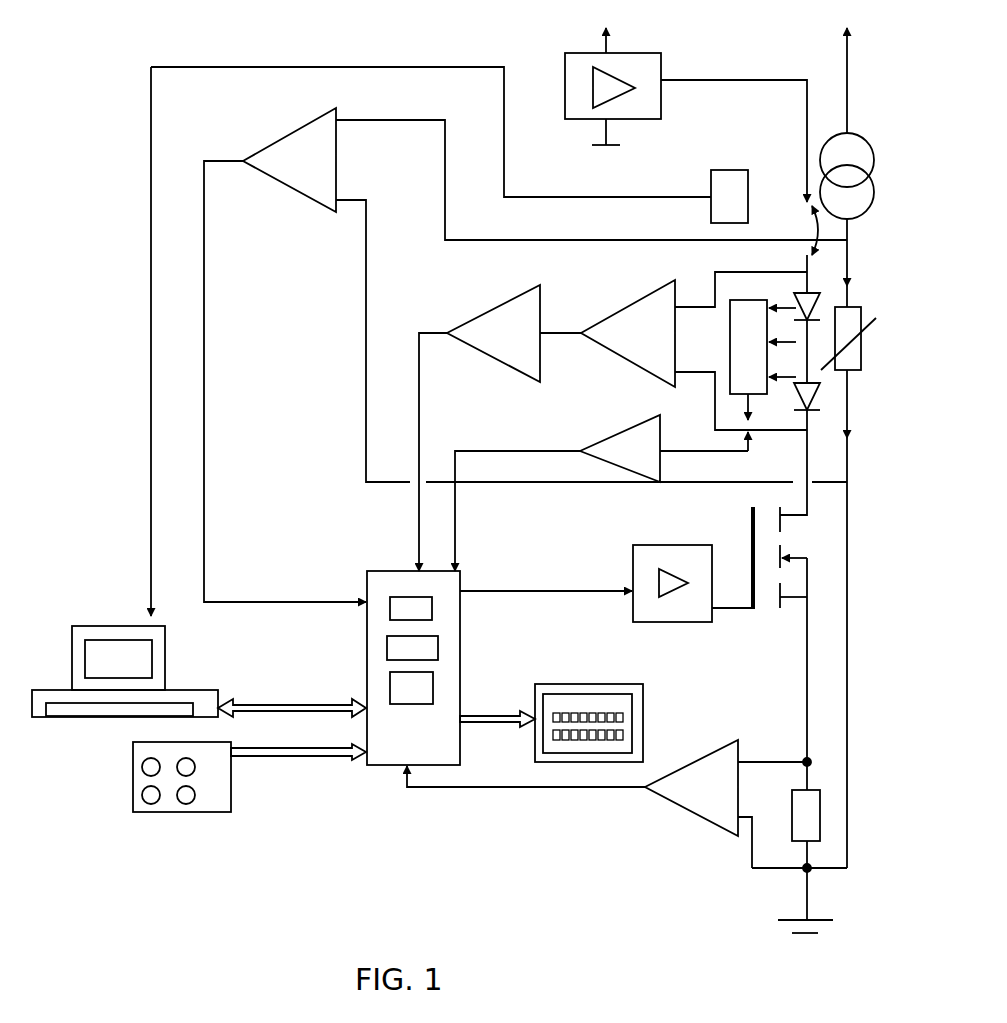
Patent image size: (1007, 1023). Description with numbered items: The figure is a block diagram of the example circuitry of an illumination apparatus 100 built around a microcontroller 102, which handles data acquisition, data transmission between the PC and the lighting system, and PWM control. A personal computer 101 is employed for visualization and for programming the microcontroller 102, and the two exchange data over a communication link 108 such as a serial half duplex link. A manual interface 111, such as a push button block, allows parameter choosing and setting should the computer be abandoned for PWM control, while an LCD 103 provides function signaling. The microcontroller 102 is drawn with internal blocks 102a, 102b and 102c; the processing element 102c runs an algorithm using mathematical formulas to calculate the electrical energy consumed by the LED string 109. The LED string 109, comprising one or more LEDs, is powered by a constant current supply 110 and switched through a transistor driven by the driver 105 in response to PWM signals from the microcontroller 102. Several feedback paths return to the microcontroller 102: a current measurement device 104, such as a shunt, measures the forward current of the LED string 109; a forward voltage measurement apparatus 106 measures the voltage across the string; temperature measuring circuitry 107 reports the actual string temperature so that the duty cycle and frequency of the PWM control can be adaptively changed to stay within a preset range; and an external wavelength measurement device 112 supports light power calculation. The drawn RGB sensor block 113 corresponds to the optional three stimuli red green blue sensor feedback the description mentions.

The illumination apparatus 100 is at (95, 110).
The personal computer 101 is at (113, 722).
The microcontroller 102 is at (428, 668).
The microcontroller module 102a is at (411, 608).
The microcontroller module 102b is at (412, 648).
The processing element 102c is at (411, 688).
The LCD 103 is at (649, 713).
The current measurement device 104 is at (817, 773).
The driver 105 is at (641, 546).
The forward voltage measurement apparatus 106 is at (546, 363).
The temperature measuring circuitry 107 is at (372, 243).
The communication link 108 is at (254, 704).
The LED string 109 is at (856, 34).
The constant current supply 110 is at (628, 49).
The manual interface 111 is at (249, 777).
The external wave length measurement device 112 is at (712, 168).
The RGB color sensor 113 is at (726, 307).